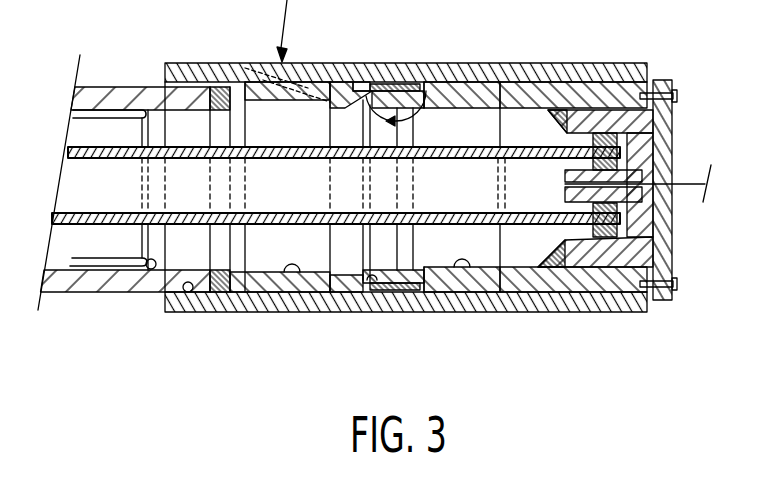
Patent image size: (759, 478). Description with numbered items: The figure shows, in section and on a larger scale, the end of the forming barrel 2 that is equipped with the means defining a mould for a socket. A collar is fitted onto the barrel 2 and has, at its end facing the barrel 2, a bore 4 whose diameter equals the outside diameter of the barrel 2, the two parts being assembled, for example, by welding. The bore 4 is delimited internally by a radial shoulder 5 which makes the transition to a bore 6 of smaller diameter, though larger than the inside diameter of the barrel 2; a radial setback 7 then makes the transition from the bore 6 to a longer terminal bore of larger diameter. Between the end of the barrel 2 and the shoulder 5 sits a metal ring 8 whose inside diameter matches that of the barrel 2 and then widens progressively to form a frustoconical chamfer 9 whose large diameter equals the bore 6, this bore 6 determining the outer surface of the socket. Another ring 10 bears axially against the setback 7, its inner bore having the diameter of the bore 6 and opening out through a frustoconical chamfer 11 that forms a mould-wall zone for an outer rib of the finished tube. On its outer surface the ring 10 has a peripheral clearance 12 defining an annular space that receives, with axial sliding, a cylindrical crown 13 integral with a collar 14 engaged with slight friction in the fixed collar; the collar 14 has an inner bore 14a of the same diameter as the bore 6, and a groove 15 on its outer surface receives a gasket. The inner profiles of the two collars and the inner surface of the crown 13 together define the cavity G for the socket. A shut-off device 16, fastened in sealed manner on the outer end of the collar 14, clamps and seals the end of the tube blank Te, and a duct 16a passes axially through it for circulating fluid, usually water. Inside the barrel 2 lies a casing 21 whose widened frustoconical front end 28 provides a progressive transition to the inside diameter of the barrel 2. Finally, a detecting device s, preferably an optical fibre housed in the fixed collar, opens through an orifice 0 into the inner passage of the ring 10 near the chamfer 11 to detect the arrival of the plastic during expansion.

The barrel 2 is at (80, 285).
The casing 21 is at (98, 110).
The front end of the casing 28 is at (148, 285).
The metal ring 8 is at (213, 63).
The bore 4 is at (185, 313).
The radial shoulder 5 is at (232, 313).
The frustoconical chamfer 9 is at (238, 122).
The device for detecting arrival of the plastic s is at (298, 63).
The ring 10 is at (334, 80).
The orifice 0 is at (400, 81).
The peripheral clearance 12 is at (368, 81).
The frustoconical chamfer 11 is at (378, 292).
The cavity G is at (432, 81).
The cylindrical crown 13 is at (400, 293).
The radial setback 7 is at (345, 297).
The bore 6 is at (288, 313).
The tube blank Te is at (462, 80).
The inner bore of the collar 14a is at (464, 300).
The collar 14 is at (529, 293).
The groove 15 is at (623, 63).
The shut-off device 16 is at (605, 262).
The duct 16a is at (665, 226).